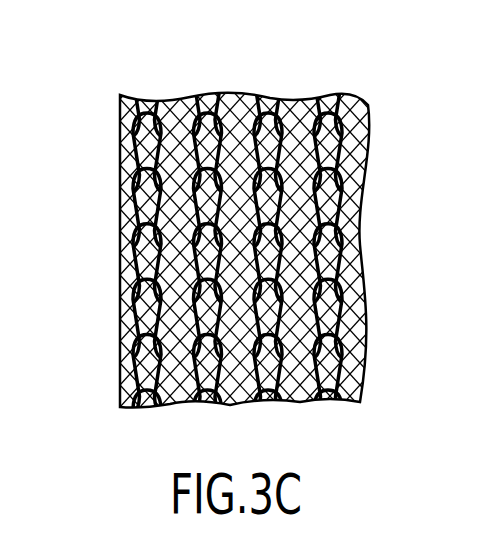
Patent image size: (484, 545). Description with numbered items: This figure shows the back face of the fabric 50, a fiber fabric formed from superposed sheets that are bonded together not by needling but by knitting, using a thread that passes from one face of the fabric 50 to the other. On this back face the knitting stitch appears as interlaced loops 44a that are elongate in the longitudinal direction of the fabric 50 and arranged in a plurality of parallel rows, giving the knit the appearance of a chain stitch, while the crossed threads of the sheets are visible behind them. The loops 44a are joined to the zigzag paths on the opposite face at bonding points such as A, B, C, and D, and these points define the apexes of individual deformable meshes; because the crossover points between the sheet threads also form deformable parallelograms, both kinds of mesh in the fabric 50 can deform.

The fabric 50 is at (244, 222).
The interlaced loops 44a is at (137, 252).
The bonding point A is at (283, 293).
The bonding point B is at (338, 232).
The bonding point C is at (277, 182).
The bonding point D is at (340, 120).